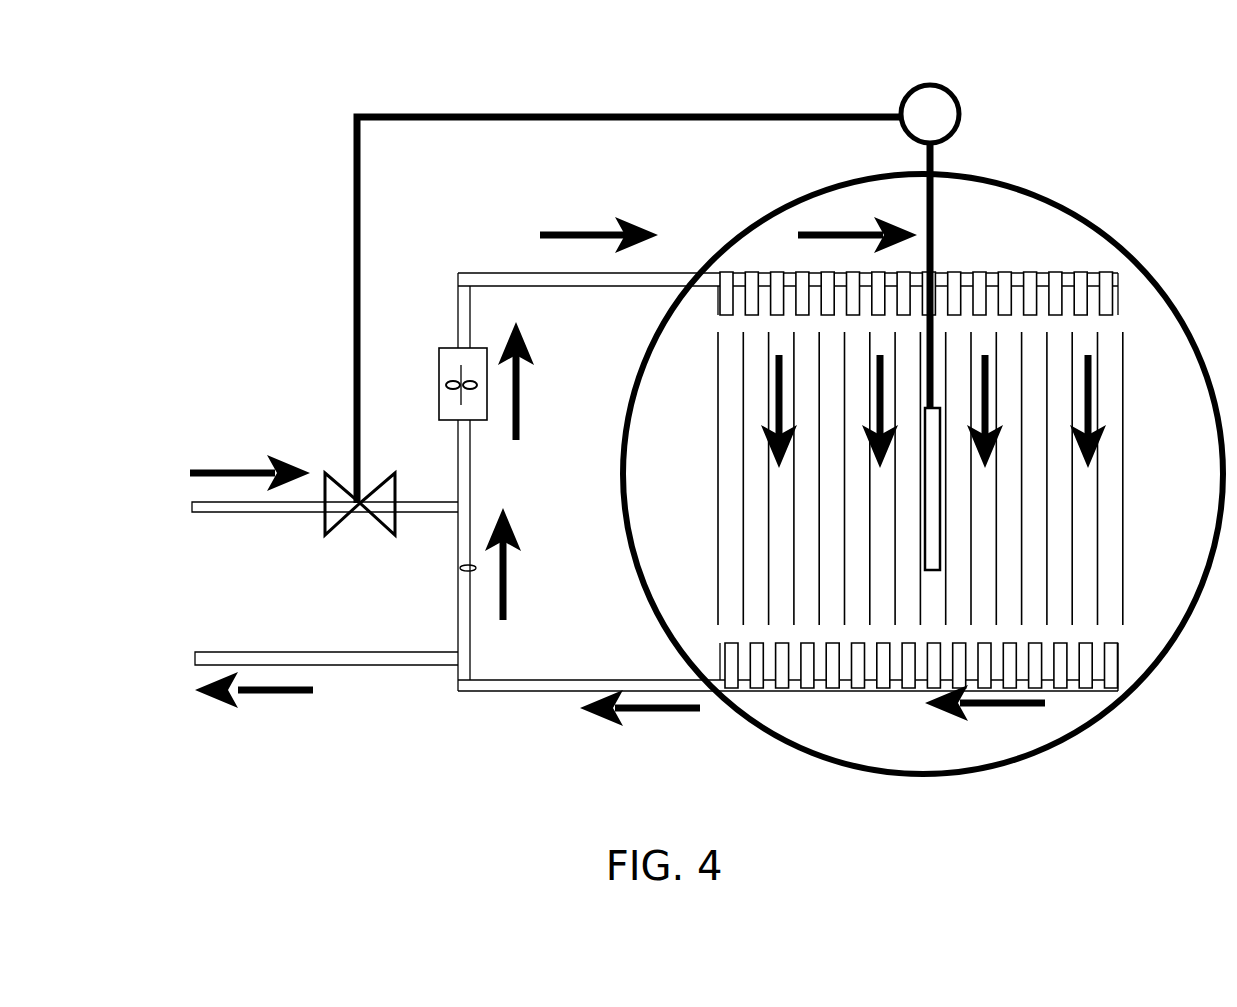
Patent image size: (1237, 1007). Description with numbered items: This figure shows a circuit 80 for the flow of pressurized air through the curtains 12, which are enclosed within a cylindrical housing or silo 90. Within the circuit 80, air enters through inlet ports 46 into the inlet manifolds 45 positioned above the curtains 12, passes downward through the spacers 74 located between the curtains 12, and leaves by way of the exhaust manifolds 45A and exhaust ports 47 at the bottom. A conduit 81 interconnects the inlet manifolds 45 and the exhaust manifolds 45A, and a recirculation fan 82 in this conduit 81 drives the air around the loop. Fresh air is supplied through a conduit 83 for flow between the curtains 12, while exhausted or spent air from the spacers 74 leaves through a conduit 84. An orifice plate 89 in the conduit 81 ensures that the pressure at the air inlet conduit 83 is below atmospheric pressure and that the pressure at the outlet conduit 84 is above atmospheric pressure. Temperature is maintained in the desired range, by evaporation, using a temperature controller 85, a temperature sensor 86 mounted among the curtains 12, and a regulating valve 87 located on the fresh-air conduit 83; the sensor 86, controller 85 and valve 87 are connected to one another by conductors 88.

The circuit 80 is at (413, 752).
The conduit 81 is at (470, 467).
The recirculation fan 82 is at (452, 362).
The conduit 83 is at (216, 508).
The conduit 84 is at (370, 660).
The temperature controller 85 is at (942, 104).
The temperature sensor 86 is at (934, 525).
The regulating valve 87 is at (352, 515).
The conductors 88 is at (512, 120).
The orifice plate 89 is at (462, 568).
The cylindrical housing 90 is at (1118, 708).
The inlet manifolds 45 is at (995, 270).
The exhaust manifolds 45A is at (848, 688).
The inlet ports 46 is at (1118, 290).
The exhaust ports 47 is at (1113, 658).
The spacers 74 is at (1110, 412).
The curtains 12 is at (1075, 500).